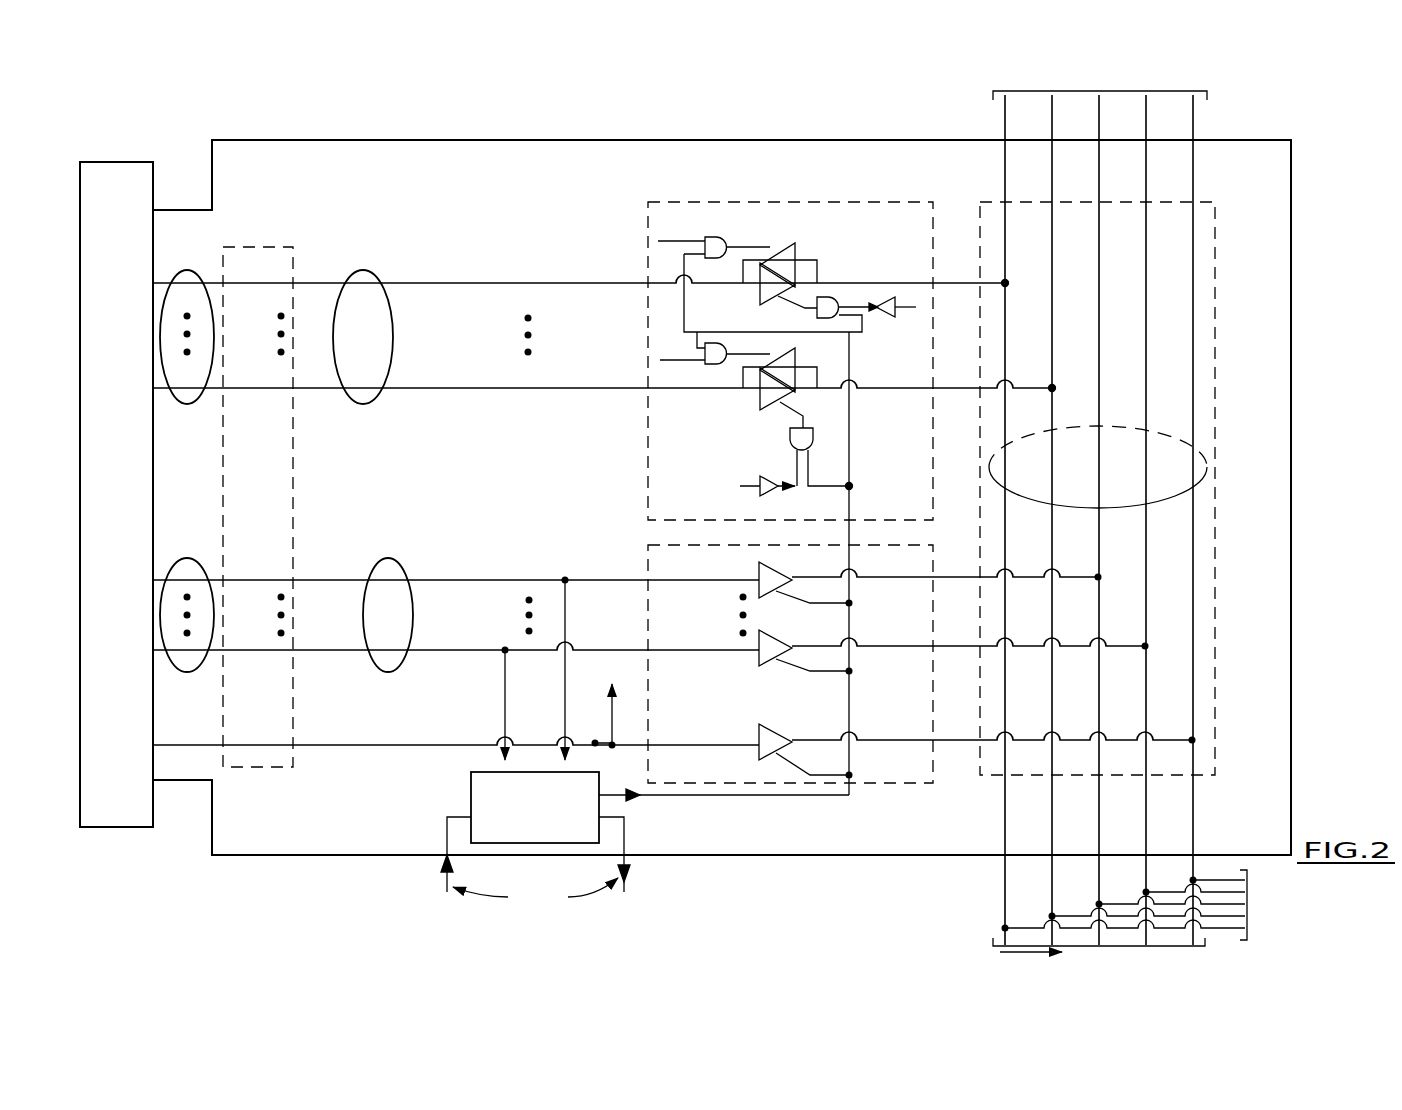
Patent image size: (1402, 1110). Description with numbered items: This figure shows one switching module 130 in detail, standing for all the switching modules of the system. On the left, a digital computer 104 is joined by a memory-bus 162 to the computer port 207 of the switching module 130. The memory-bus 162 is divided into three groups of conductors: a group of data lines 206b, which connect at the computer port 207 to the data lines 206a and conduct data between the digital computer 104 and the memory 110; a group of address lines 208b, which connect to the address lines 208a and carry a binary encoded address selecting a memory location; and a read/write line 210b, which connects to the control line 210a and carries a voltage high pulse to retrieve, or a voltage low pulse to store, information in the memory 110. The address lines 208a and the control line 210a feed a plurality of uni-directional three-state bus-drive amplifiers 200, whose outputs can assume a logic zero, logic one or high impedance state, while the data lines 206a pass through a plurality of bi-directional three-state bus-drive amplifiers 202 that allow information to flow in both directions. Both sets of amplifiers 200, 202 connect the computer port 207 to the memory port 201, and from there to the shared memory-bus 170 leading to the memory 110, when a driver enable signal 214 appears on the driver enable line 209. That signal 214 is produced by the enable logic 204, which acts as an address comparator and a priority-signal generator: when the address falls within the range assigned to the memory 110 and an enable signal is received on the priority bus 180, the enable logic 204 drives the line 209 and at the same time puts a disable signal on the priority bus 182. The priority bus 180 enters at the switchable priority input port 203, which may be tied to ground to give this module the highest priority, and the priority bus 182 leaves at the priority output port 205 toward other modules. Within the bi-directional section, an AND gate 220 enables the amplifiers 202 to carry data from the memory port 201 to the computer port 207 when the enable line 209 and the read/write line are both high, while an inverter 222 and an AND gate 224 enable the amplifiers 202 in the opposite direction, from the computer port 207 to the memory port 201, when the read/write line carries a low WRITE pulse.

The digital computer 104 is at (104, 160).
The memory-bus 162 is at (190, 207).
The switching module 130 is at (803, 99).
The computer port 207 is at (296, 249).
The data lines 206a is at (378, 403).
The data lines 206b is at (200, 402).
The address lines 208a is at (398, 562).
The address lines 208b is at (210, 538).
The control line 210a is at (491, 748).
The line 210b is at (218, 750).
The bi-directional three-state bus-drive amplifiers 202 is at (723, 361).
The uni-directional three-state bus-drive amplifiers 200 is at (648, 568).
The AND gate 220 is at (726, 236).
The AND gate 224 is at (810, 320).
The inverter 222 is at (882, 318).
The memory port 201 is at (989, 199).
The memory-bus 170 is at (1207, 467).
The enable logic 204 is at (469, 795).
The driver enable signal 214 is at (676, 798).
The driver enable line 209 is at (852, 789).
The priority bus 180 is at (435, 861).
The priority bus 182 is at (630, 861).
The priority input port 203 is at (440, 858).
The priority output port 205 is at (632, 860).
The memory 110 is at (1176, 907).